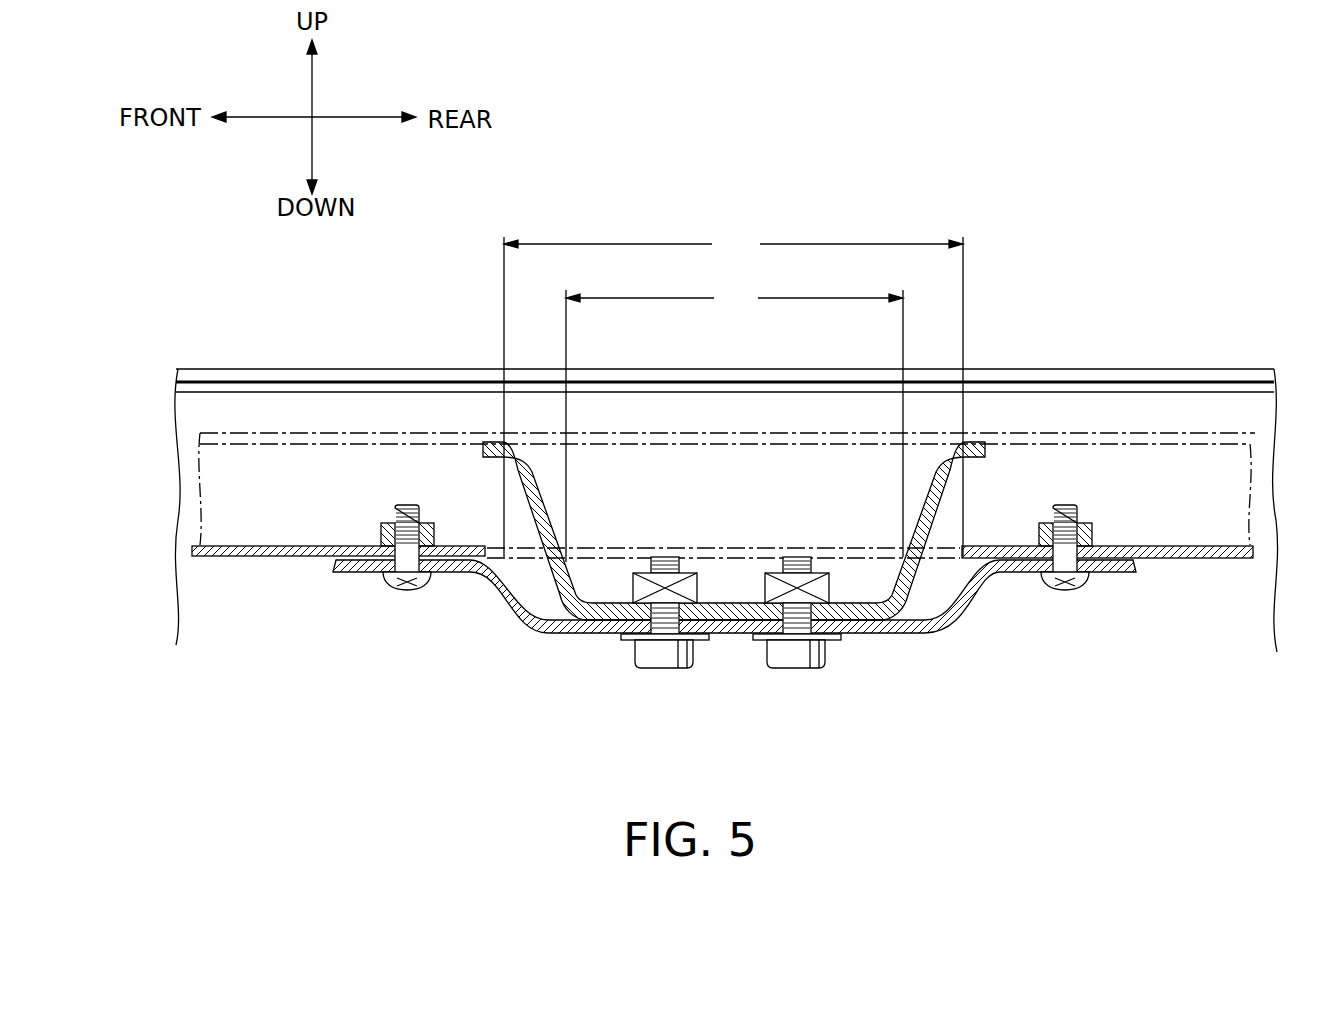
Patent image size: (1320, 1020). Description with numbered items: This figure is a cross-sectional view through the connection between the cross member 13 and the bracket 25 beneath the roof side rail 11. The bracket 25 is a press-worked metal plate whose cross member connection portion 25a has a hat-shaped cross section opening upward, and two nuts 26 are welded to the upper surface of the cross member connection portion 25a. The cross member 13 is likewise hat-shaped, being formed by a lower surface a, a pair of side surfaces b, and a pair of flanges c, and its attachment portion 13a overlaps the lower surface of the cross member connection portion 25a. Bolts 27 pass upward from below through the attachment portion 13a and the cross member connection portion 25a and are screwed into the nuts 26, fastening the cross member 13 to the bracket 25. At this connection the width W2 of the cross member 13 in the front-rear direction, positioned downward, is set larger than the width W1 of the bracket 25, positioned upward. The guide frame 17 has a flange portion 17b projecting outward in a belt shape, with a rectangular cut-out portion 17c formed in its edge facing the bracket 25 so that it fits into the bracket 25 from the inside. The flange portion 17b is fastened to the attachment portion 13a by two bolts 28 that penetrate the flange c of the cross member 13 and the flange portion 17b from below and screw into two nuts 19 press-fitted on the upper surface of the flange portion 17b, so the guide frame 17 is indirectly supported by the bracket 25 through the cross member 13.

The roof side rail 11 is at (1090, 366).
The cross member 13 is at (533, 642).
The attachment portion 13a is at (573, 634).
The guide frame 17 is at (295, 564).
The flange portion 17b is at (1178, 560).
The cut-out portion 17c is at (497, 545).
The nut 19 is at (383, 540).
The bracket 25 is at (930, 599).
The cross member connection portion 25a is at (730, 603).
The nut 26 is at (650, 572).
The bolt 27 is at (677, 665).
The bolt 28 is at (405, 590).
The width of the bracket W1 is at (734, 423).
The width of the cross member W2 is at (733, 393).
The lower surface a is at (862, 634).
The side surface b is at (500, 600).
The flange c is at (372, 573).